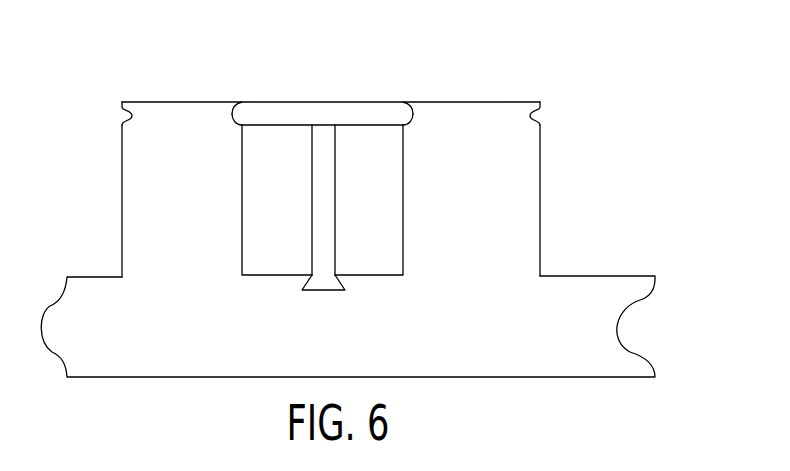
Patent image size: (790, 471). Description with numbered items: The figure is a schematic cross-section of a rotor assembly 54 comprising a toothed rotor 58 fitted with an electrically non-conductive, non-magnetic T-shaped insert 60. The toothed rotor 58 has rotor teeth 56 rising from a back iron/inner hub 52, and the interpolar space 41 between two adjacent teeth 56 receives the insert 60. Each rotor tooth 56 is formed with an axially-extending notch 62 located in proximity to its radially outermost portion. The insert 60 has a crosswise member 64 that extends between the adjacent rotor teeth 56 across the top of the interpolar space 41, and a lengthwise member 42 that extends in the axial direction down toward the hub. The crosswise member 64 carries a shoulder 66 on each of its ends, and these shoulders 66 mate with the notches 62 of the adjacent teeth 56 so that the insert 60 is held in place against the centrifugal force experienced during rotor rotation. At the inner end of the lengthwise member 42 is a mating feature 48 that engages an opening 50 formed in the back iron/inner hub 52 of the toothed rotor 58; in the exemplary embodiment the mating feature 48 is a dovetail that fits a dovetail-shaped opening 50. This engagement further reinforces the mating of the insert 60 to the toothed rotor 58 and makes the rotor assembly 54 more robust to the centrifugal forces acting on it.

The interpolar space 41 is at (288, 194).
The lengthwise member 42 is at (312, 215).
The mating feature 48 is at (340, 279).
The opening 50 is at (316, 302).
The back iron/inner hub 52 is at (598, 276).
The rotor assembly 54 is at (454, 57).
The rotor teeth 56 is at (122, 200).
The toothed rotor 58 is at (583, 152).
The T-shaped insert 60 is at (331, 89).
The axially-extending notches 62 is at (117, 117).
The crosswise member 64 is at (371, 127).
The shoulder 66 is at (235, 106).